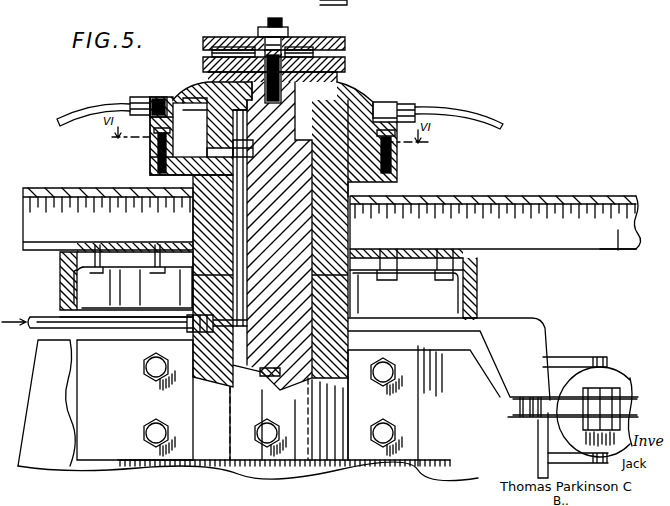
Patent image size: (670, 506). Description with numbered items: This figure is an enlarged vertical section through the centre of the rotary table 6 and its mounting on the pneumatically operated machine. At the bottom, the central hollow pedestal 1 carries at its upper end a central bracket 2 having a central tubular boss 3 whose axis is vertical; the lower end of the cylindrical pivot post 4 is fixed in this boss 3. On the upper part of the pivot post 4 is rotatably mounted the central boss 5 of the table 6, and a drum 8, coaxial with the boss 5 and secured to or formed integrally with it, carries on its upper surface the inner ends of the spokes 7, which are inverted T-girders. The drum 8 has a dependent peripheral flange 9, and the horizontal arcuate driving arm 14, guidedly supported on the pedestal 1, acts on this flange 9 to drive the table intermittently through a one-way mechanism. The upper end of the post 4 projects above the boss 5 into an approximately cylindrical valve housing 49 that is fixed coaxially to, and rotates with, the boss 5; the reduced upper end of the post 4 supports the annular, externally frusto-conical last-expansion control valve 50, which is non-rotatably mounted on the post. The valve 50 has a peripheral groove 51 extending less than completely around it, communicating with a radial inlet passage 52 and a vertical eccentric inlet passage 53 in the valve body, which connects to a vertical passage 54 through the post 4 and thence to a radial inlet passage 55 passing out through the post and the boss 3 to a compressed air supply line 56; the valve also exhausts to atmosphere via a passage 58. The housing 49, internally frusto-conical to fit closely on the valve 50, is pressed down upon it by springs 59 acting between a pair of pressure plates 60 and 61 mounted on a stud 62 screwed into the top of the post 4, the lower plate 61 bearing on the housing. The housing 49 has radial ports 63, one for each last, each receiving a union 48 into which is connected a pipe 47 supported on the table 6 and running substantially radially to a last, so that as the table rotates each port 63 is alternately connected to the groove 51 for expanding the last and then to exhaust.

The central hollow pedestal 1 is at (471, 464).
The central bracket 2 is at (360, 453).
The central tubular boss 3 is at (214, 434).
The pivot post 4 is at (272, 295).
The central boss 5 is at (330, 226).
The rotary table 6 is at (604, 195).
The spokes 7 is at (618, 251).
The drum 8 is at (470, 266).
The peripheral flange 9 is at (470, 290).
The driving arm 14 is at (458, 331).
The pipe 47 is at (72, 112).
The union 48 is at (140, 97).
The valve housing 49 is at (159, 97).
The last-expansion control valve 50 is at (352, 142).
The peripheral groove 51 is at (395, 170).
The radial inlet passage 52 is at (150, 168).
The vertical inlet passage 53 is at (194, 183).
The vertical passage 54 is at (248, 238).
The radial inlet passage 55 is at (193, 380).
The compressed air supply line 56 is at (51, 321).
The exhaust passage 58 is at (276, 45).
The springs 59 is at (230, 48).
The pressure plate 60 is at (346, 46).
The pressure plate 61 is at (346, 67).
The stud 62 is at (284, 37).
The radial ports 63 is at (210, 98).